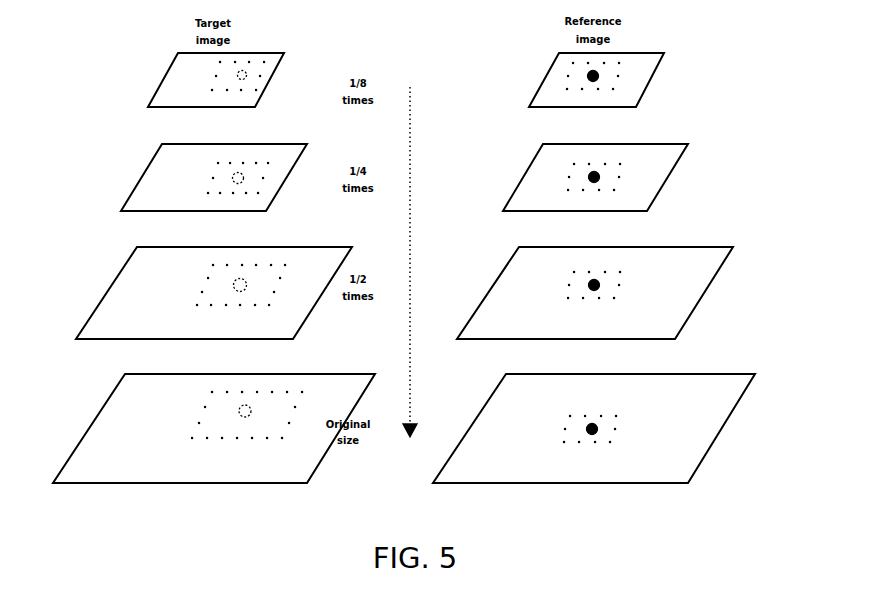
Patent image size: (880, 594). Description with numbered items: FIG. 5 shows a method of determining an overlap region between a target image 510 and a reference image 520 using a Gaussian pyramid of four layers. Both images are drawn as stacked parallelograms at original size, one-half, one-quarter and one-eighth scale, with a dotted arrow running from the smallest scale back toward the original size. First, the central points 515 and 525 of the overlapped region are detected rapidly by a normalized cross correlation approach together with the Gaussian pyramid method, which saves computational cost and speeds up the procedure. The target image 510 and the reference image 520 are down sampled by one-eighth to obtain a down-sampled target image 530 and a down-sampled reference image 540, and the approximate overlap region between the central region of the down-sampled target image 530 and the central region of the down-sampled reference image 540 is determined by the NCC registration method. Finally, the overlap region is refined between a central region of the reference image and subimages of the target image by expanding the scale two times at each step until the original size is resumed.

The target image 510 is at (147, 473).
The central point of overlapped region 515 is at (248, 72).
The reference image 520 is at (630, 475).
The central point of overlapped region 525 is at (600, 74).
The down-sampled target image 530 is at (170, 100).
The down-sampled reference image 540 is at (642, 82).